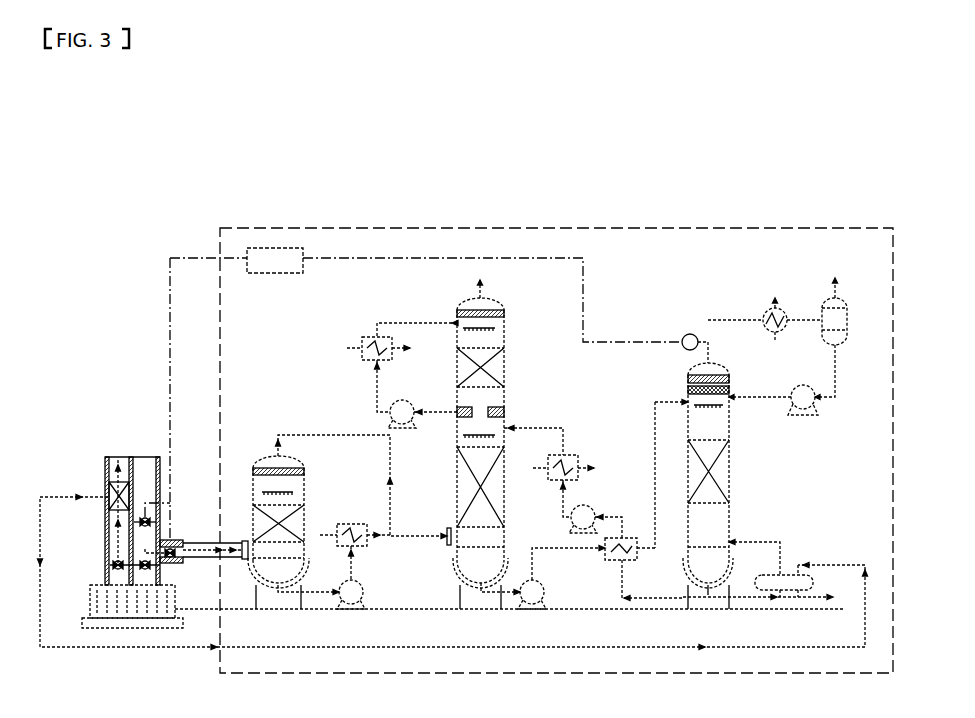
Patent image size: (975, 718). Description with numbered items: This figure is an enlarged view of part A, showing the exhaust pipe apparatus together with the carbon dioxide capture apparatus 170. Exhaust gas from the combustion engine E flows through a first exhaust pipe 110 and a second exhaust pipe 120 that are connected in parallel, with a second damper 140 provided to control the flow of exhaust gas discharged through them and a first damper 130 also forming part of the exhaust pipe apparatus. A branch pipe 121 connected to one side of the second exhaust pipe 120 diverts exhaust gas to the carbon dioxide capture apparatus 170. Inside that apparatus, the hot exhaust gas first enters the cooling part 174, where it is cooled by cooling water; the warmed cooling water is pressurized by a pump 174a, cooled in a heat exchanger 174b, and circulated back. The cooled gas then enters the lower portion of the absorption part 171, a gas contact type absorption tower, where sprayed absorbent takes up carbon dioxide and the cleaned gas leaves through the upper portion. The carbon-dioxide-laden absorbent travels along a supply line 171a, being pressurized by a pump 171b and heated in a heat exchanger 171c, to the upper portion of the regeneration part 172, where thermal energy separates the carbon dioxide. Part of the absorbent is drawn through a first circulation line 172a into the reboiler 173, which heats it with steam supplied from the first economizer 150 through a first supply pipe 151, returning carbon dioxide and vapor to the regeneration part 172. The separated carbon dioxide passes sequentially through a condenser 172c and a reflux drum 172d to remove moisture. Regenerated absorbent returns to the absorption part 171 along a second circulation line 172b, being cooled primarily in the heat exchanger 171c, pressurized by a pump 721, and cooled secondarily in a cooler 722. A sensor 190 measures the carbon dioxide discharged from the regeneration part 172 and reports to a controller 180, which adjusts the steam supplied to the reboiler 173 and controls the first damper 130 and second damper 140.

The first exhaust pipe 110 is at (118, 455).
The second exhaust pipe 120 is at (145, 462).
The branch pipe 121 is at (187, 560).
The first damper 130 is at (166, 542).
The second damper 140 is at (117, 563).
The first economizer 150 is at (110, 497).
The first supply pipe 151 is at (297, 647).
The carbon dioxide capture apparatus 170 is at (615, 673).
The absorption part 171 is at (457, 446).
The supply line 171a is at (655, 467).
The pump 171b is at (544, 592).
The heat exchanger 171c is at (663, 582).
The regeneration part 172 is at (729, 468).
The first circulation line 172a is at (762, 540).
The second circulation line 172b is at (542, 428).
The condenser 172c is at (766, 313).
The reflux drum 172d is at (821, 306).
The reboiler 173 is at (792, 575).
The cooling part 174 is at (303, 476).
The pump 174a is at (363, 592).
The heat exchanger 174b is at (344, 524).
The controller 180 is at (256, 274).
The sensor 190 is at (690, 334).
The pump 721 is at (600, 498).
The cooler 722 is at (590, 447).
The combustion engine E is at (178, 600).
The part A is at (100, 258).